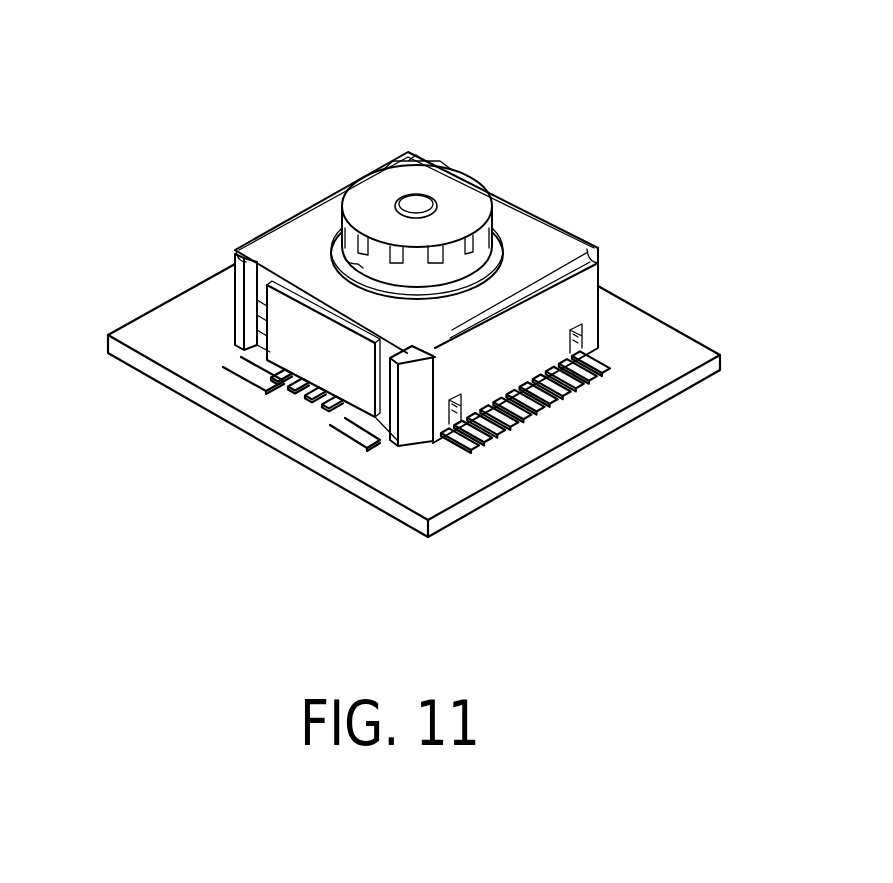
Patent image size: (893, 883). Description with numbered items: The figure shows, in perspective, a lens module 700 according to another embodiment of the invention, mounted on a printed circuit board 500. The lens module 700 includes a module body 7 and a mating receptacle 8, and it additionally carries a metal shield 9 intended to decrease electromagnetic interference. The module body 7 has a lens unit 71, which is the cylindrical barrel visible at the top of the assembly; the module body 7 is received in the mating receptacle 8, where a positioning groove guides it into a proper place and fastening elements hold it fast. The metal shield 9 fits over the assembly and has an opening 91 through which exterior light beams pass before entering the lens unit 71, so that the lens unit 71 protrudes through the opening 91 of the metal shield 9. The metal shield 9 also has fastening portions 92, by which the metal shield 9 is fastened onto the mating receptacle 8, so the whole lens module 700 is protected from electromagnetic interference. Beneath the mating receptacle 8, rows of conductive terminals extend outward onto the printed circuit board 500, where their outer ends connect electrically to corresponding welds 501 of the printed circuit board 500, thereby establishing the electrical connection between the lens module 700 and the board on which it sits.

The lens module 700 is at (601, 98).
The module body 7 is at (415, 161).
The lens unit 71 is at (372, 172).
The mating receptacle 8 is at (548, 219).
The metal shield 9 is at (350, 321).
The opening 91 is at (363, 263).
The fastening portions 92 is at (383, 395).
The printed circuit board 500 is at (183, 397).
The welds 501 is at (603, 370).